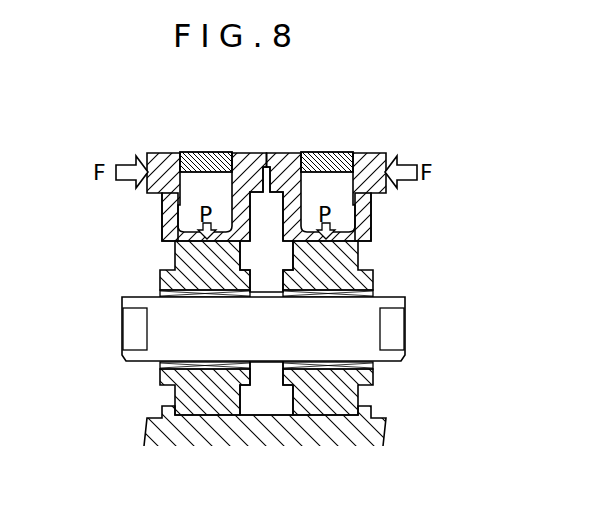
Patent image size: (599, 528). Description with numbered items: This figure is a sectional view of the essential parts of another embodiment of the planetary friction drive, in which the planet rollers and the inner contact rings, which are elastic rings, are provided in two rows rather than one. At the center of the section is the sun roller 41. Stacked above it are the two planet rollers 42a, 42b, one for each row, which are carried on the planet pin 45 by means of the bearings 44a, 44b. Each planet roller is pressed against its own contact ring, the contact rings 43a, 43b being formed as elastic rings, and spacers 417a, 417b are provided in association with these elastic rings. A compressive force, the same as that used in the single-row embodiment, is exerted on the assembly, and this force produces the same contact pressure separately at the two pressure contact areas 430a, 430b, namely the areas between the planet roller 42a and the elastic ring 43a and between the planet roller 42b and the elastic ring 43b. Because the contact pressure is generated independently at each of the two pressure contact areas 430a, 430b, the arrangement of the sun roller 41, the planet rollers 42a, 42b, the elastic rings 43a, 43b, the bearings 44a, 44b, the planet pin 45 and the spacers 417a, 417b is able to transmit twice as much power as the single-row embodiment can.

The sun roller 41 is at (278, 427).
The planet roller 42a is at (350, 262).
The planet roller 42b is at (185, 262).
The contact ring 43a is at (371, 155).
The contact ring 43b is at (247, 152).
The bearing 44a is at (378, 291).
The bearing 44b is at (178, 290).
The planet pin 45 is at (157, 353).
The spacer 417a is at (328, 152).
The spacer 417b is at (191, 152).
The pressure contact area 430a is at (357, 246).
The pressure contact area 430b is at (176, 246).